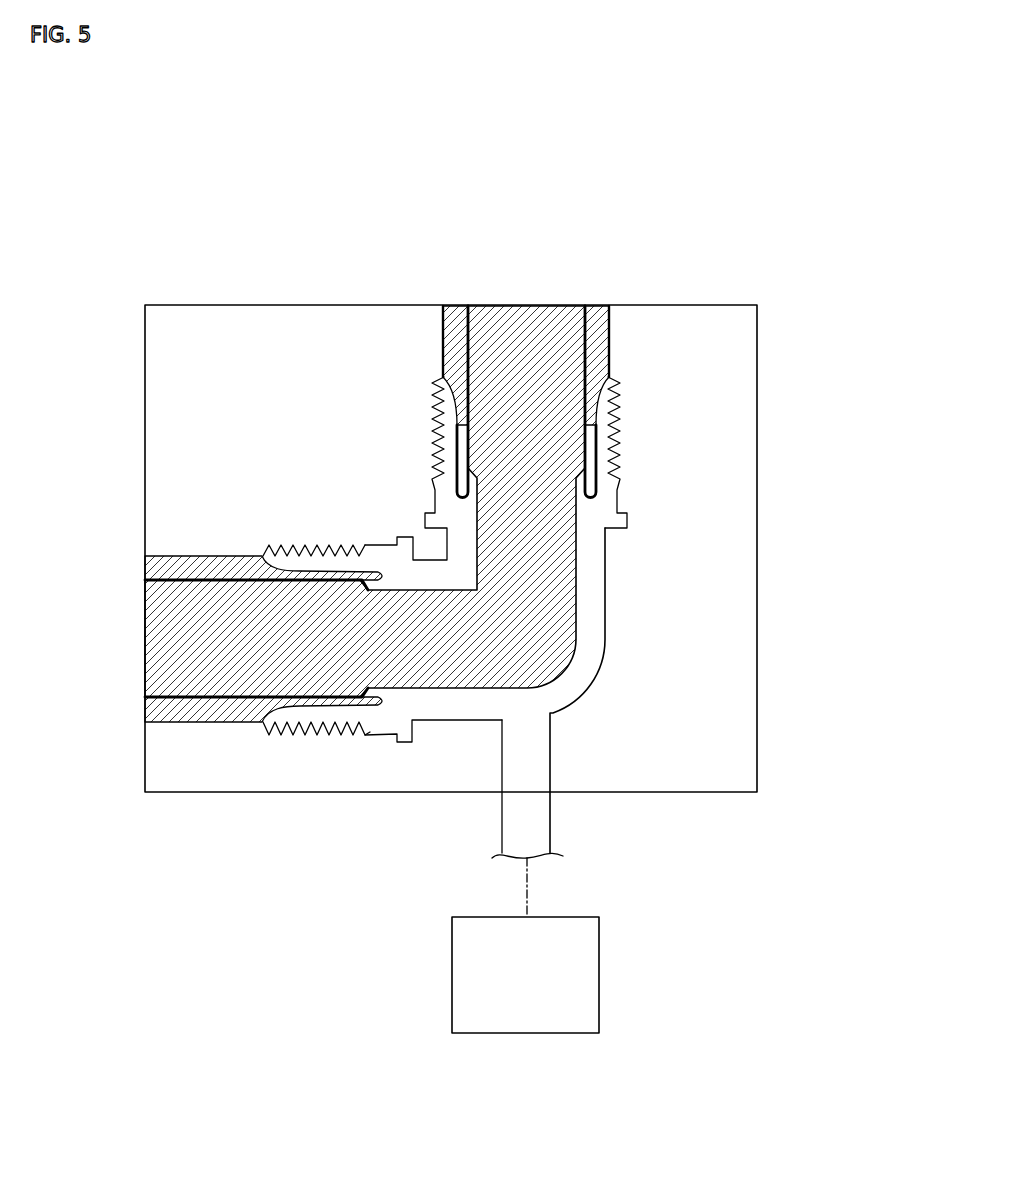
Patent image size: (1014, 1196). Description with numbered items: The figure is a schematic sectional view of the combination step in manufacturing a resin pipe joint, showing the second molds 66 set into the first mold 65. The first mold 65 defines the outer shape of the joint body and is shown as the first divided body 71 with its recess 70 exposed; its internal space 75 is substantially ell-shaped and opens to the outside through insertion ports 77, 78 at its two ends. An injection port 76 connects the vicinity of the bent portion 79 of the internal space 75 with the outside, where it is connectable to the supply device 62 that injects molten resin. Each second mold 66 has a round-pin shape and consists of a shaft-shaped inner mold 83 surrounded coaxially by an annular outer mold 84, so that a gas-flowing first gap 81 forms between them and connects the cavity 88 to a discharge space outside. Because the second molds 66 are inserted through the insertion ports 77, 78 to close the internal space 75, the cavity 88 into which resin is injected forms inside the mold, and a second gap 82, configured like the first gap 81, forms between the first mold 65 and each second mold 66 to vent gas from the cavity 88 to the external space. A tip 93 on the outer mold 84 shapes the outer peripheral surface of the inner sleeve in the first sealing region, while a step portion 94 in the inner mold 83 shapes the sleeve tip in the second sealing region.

The first divided body 71 is at (218, 304).
The first mold 65 is at (451, 510).
The insertion port 78 is at (447, 318).
The second gap 82 is at (445, 307).
The first gap 81 is at (466, 306).
The second mold 66 is at (321, 460).
The inner mold 83 is at (530, 298).
The outer mold 84 is at (595, 305).
The cavity 88 is at (592, 564).
The internal space 75 is at (715, 554).
The recess 70 is at (593, 620).
The insertion port 77 is at (163, 562).
The tip 93 is at (397, 742).
The step portion 94 is at (373, 708).
The injection port 76 is at (500, 752).
The bent portion 79 is at (602, 680).
The supply device 62 is at (452, 980).